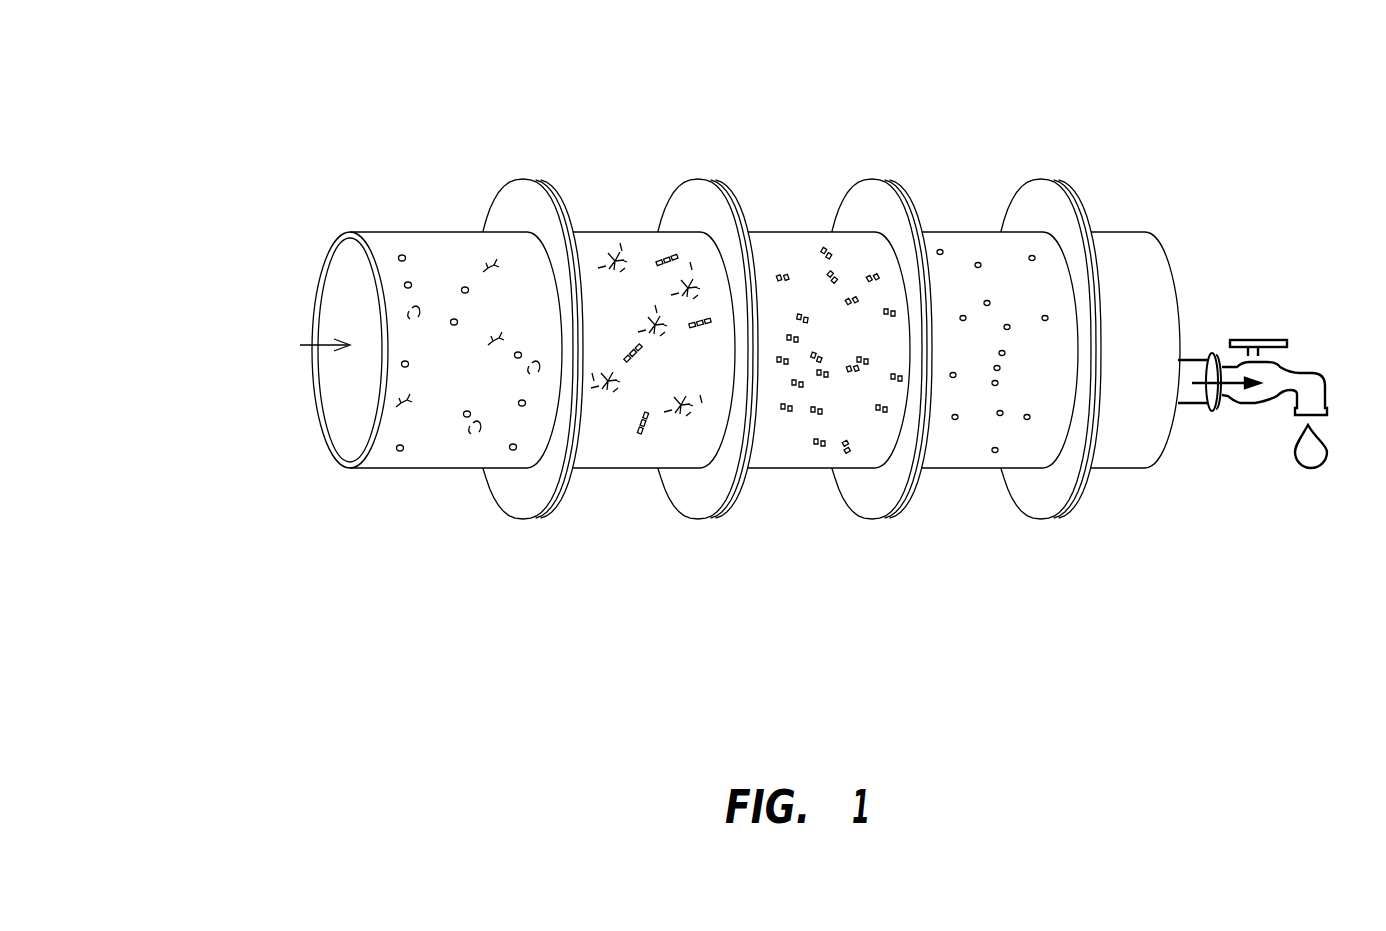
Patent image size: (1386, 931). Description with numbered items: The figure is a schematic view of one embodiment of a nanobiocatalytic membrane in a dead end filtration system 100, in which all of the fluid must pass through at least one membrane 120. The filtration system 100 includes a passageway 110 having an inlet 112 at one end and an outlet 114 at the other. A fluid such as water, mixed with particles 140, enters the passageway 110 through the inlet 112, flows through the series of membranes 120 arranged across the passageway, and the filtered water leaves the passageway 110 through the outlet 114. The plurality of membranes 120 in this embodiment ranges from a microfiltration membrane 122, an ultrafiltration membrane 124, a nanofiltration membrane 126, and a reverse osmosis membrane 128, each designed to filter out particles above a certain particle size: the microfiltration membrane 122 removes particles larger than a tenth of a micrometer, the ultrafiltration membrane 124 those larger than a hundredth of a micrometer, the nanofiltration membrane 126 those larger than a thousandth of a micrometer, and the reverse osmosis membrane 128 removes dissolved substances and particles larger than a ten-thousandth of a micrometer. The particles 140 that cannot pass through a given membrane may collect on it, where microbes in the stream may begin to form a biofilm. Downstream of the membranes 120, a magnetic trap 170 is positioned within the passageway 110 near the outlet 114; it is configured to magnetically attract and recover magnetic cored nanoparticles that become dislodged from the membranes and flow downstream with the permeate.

The dead end filtration system 100 is at (300, 98).
The passageway 110 is at (359, 414).
The inlet 112 is at (340, 345).
The outlet 114 is at (1192, 360).
The membranes 120 is at (1100, 577).
The microfiltration membrane 122 is at (525, 181).
The ultrafiltration membrane 124 is at (700, 181).
The nanofiltration membrane 126 is at (874, 181).
The reverse osmosis membrane 128 is at (1043, 181).
The particles 140 is at (400, 255).
The magnetic trap 170 is at (1213, 413).